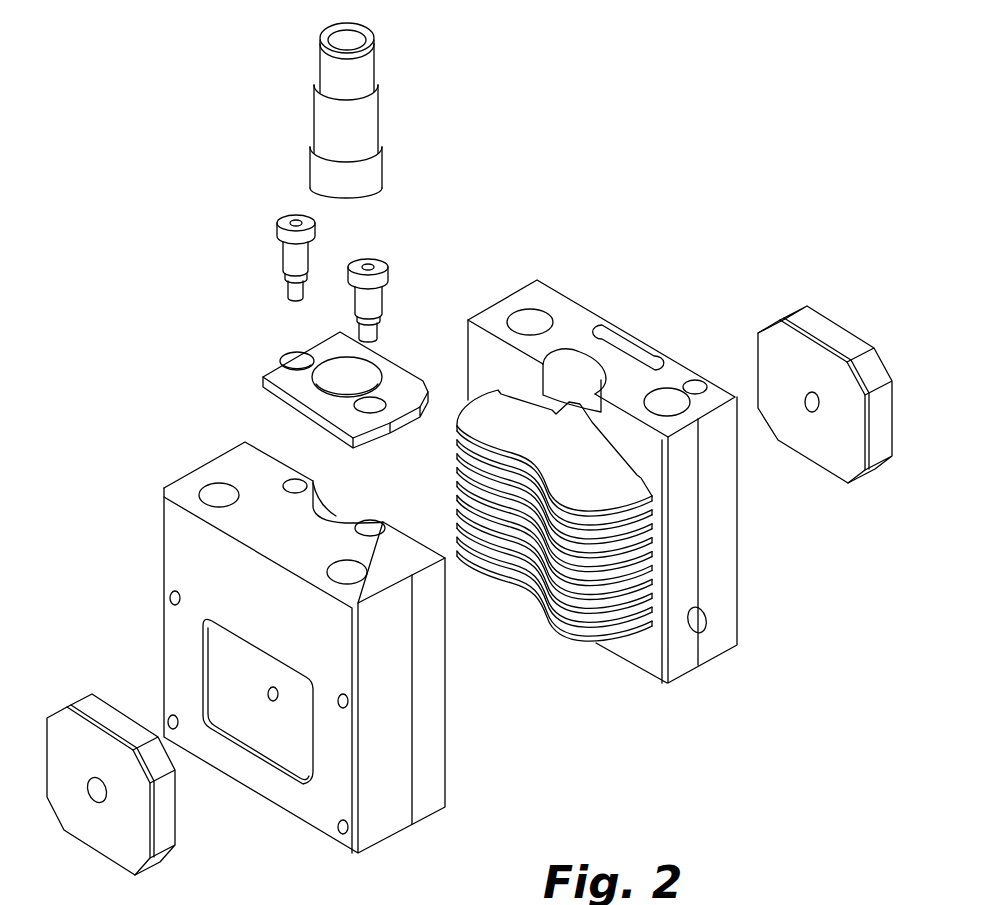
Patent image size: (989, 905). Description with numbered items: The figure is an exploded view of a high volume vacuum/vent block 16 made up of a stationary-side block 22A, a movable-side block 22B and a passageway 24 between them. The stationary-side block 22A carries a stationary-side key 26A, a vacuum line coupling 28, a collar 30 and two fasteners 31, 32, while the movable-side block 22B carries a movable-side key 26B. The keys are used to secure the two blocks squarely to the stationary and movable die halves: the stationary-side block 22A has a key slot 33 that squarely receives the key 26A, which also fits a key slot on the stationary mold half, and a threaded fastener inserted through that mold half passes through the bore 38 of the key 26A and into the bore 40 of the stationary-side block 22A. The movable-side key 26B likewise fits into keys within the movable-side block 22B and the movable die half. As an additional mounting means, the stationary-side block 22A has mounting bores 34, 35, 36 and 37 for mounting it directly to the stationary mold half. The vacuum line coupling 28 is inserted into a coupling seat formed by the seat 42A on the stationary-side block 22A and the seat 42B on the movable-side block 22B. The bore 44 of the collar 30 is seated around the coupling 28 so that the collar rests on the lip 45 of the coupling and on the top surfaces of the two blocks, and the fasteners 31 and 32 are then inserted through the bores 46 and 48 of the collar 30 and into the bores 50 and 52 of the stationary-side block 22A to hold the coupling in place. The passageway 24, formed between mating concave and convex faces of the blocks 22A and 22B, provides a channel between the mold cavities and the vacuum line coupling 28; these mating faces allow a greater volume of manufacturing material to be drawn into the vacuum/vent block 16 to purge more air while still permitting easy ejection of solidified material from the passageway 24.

The vacuum/vent block 16 is at (635, 196).
The stationary-side block 22A is at (186, 487).
The movable-side block 22B is at (538, 292).
The passageway 24 is at (616, 701).
The stationary-side key 26A is at (88, 703).
The movable-side key 26B is at (807, 320).
The vacuum line coupling 28 is at (355, 117).
The collar 30 is at (398, 378).
The fastener 31 is at (372, 262).
The fastener 32 is at (291, 222).
The key slot 33 is at (297, 748).
The mounting bore 34 is at (345, 702).
The mounting bore 35 is at (343, 830).
The mounting bore 36 is at (172, 722).
The mounting bore 37 is at (172, 598).
The bore of stationary-side key 38 is at (98, 792).
The bore of stationary-side block 40 is at (270, 695).
The seat 42A is at (313, 500).
The seat 42B is at (577, 368).
The bore of collar 44 is at (337, 372).
The lip 45 is at (380, 148).
The bore of collar 46 is at (362, 407).
The bore of collar 48 is at (290, 362).
The bore of stationary-side block 50 is at (371, 527).
The bore of stationary-side block 52 is at (292, 490).